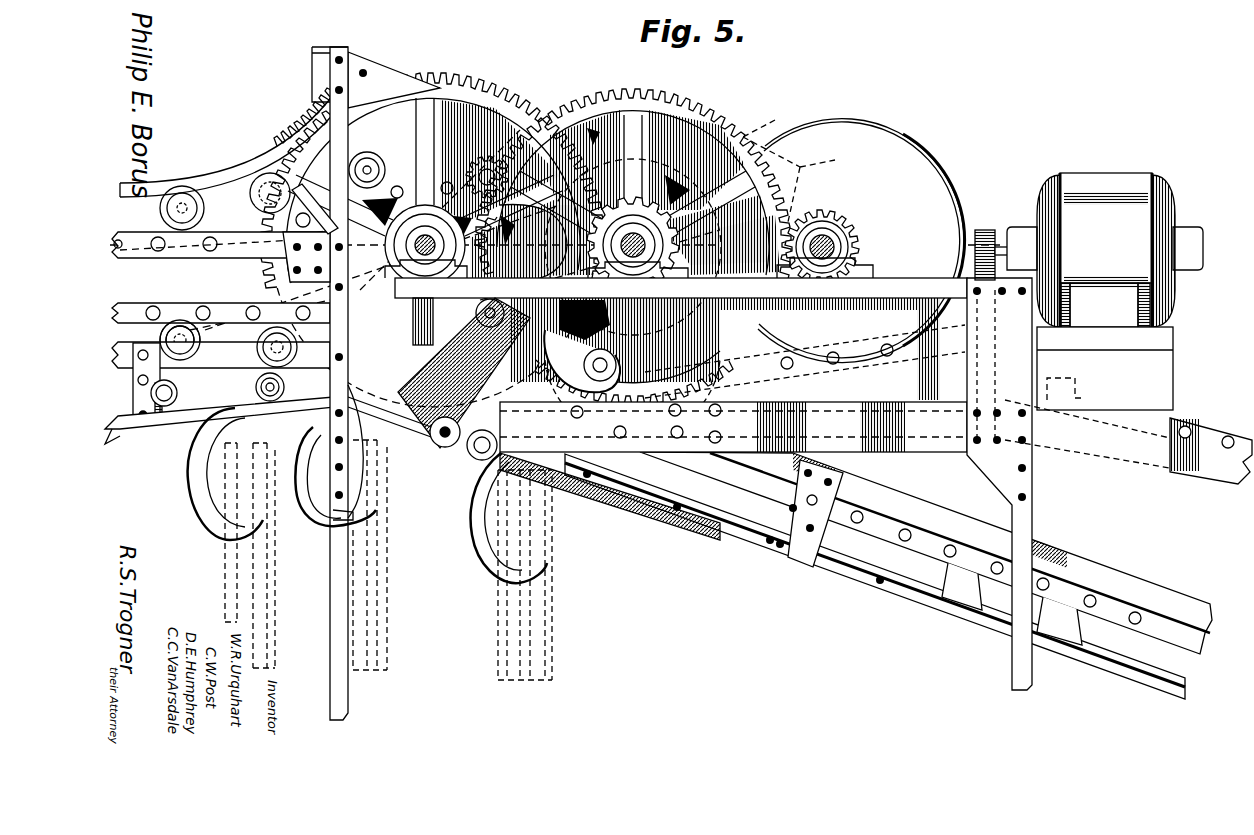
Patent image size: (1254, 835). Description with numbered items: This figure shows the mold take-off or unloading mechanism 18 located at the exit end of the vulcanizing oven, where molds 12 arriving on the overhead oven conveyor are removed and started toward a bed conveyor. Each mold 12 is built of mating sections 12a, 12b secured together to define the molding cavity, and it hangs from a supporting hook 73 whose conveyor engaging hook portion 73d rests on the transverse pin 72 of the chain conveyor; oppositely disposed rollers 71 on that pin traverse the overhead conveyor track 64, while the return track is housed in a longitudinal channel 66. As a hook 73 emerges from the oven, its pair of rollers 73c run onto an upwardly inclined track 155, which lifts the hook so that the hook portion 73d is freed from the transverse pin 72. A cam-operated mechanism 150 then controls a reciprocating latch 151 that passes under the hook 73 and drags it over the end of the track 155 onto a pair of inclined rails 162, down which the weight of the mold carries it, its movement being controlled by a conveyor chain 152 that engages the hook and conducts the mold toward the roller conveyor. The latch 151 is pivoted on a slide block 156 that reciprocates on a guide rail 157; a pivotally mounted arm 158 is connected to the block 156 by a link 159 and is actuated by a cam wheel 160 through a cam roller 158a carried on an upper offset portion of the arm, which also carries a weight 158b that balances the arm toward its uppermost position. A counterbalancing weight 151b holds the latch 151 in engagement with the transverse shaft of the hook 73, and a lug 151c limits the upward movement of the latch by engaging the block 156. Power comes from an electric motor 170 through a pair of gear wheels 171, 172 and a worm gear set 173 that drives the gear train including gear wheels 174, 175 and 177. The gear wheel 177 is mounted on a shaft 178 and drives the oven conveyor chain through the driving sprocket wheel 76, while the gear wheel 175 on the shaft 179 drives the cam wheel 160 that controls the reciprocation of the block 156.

The mold 12 is at (374, 560).
The mating mold section 12a is at (220, 588).
The mating mold section 12b is at (270, 607).
The unloading mechanism 18 is at (926, 553).
The overhead conveyor track 64 is at (221, 335).
The longitudinal channel 66 is at (221, 254).
The roller 71 is at (160, 211).
The transverse pin 72 is at (252, 205).
The supporting hook 73 is at (135, 432).
The roller 73c is at (255, 390).
The conveyor engaging hook portion 73d is at (184, 325).
The driving sprocket wheel 76 is at (382, 168).
The cam-operated mechanism 150 is at (563, 102).
The hook (reciprocating latch) 151 is at (330, 376).
The counterbalancing weight 151b is at (620, 465).
The lug 151c is at (455, 450).
The conveyor chain 152 is at (1215, 422).
The inclined track 155 is at (182, 422).
The slide block 156 is at (520, 370).
The guide rail 157 is at (760, 548).
The pivotally mounted arm 158 is at (539, 322).
The cam roller 158a is at (778, 122).
The weight 158b is at (838, 157).
The link 159 is at (432, 434).
The cam wheel 160 is at (718, 272).
The inclined rails 162 is at (858, 578).
The electric motor 170 is at (1102, 175).
The gear wheel 171 is at (985, 230).
The gear wheel 172 is at (993, 470).
The worm gear set 173 is at (942, 192).
The gear wheel 174 is at (843, 218).
The gear wheel 175 is at (668, 100).
The gear wheel 177 is at (292, 135).
The shaft 178 is at (681, 339).
The shaft 179 is at (700, 232).